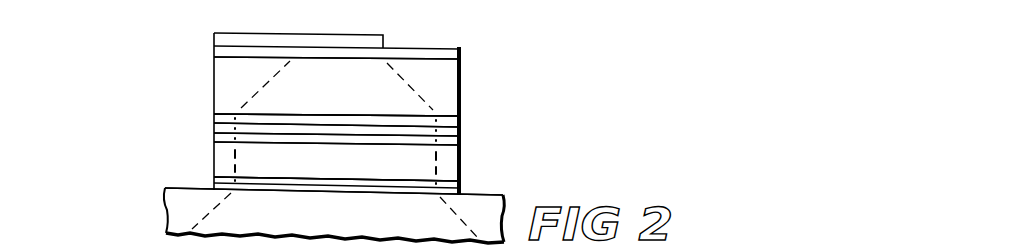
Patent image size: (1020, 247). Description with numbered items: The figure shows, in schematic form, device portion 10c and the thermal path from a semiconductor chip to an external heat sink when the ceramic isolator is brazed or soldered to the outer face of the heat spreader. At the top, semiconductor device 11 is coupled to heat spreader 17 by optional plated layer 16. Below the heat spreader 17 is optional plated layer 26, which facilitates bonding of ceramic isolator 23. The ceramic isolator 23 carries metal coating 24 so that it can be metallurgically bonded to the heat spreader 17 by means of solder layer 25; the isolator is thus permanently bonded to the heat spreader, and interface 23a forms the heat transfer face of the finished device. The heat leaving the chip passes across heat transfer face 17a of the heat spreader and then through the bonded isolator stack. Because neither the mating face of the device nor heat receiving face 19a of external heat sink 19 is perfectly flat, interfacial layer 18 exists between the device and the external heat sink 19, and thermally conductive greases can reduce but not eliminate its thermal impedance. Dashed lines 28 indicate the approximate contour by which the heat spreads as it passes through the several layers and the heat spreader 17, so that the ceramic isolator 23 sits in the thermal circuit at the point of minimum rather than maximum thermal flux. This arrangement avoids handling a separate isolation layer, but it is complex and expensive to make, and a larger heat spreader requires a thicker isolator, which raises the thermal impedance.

The device portion 10c is at (488, 90).
The semiconductor device 11 is at (297, 45).
The plated layer 16 is at (214, 48).
The heat spreader 17 is at (324, 80).
The heat transfer face 17a is at (386, 113).
The dashed lines 28 is at (258, 84).
The plated layer 26 is at (214, 114).
The solder layer 25 is at (214, 123).
The metal coating 24 is at (216, 137).
The ceramic isolator 23 is at (222, 160).
The interface 23a is at (405, 182).
The interfacial layer 18 is at (222, 183).
The external heat sink 19 is at (475, 207).
The heat receiving face 19a is at (360, 192).